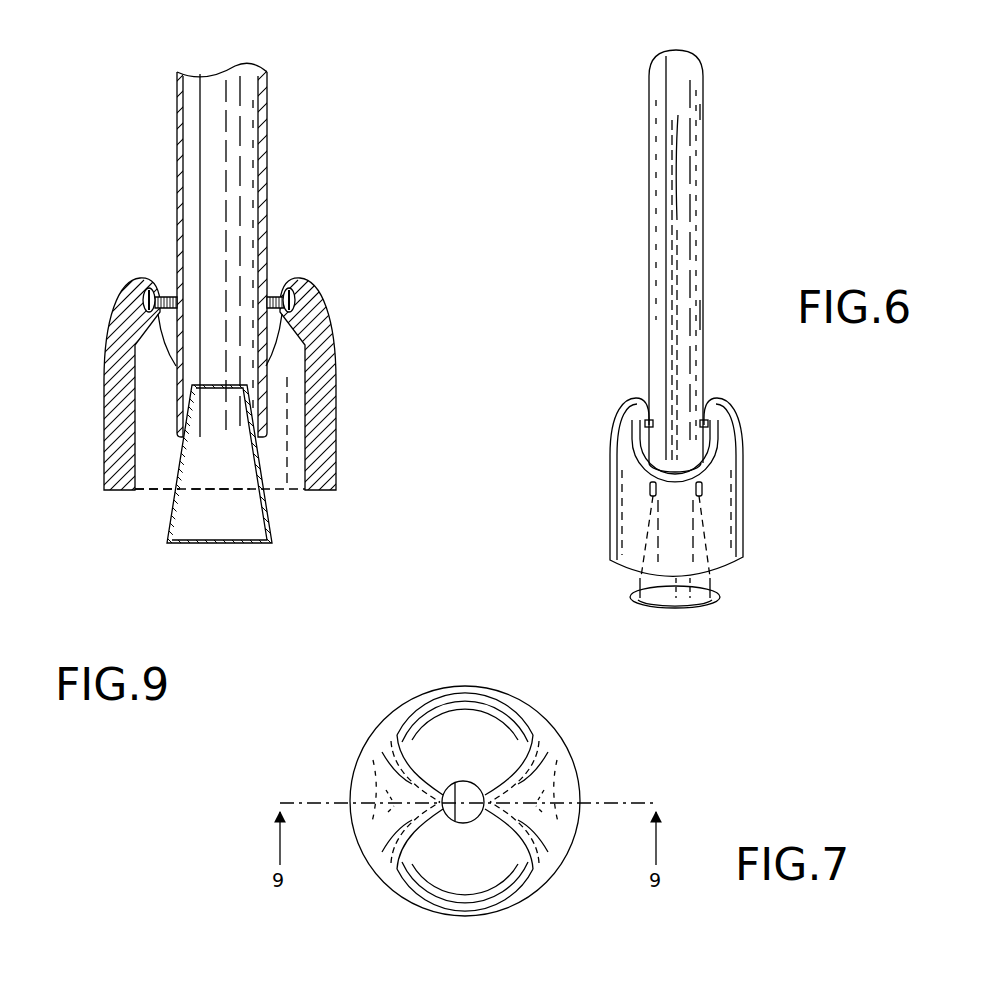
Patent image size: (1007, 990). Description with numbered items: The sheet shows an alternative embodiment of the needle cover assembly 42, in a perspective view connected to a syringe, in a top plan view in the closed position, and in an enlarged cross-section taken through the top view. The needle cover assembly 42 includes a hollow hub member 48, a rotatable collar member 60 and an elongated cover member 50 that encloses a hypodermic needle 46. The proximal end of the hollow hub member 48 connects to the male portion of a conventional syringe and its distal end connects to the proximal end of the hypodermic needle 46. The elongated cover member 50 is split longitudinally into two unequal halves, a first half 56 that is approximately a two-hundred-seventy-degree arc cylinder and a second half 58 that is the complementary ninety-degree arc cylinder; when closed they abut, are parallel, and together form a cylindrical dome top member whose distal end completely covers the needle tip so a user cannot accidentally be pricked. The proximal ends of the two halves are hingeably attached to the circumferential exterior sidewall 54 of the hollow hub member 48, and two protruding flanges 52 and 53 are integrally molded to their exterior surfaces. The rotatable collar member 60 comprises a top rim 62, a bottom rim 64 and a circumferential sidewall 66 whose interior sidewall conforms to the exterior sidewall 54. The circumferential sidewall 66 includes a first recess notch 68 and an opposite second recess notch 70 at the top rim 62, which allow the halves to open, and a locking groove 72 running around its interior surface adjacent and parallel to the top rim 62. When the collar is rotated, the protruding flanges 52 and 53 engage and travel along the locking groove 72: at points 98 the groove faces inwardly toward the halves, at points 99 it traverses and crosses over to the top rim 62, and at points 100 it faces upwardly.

In FIG. 6, the needle cover assembly 42 is at (572, 246).
In FIG. 6, the hypodermic needle 46 is at (673, 217).
In FIG. 6, the hollow hub member 48 is at (681, 615).
In FIG. 6, the elongated cover member 50 is at (692, 48).
In FIG. 9, the protruding flange 52 is at (292, 286).
In FIG. 6, the protruding flange 52 is at (716, 398).
In FIG. 9, the protruding flange 53 is at (145, 286).
In FIG. 6, the protruding flange 53 is at (634, 398).
In FIG. 6, the circumferential exterior sidewall 54 is at (647, 580).
In FIG. 6, the first half 56 is at (704, 113).
In FIG. 6, the second half 58 is at (649, 92).
In FIG. 9, the rotatable collar member 60 is at (336, 458).
In FIG. 6, the rotatable collar member 60 is at (743, 537).
In FIG. 7, the rotatable collar member 60 is at (574, 764).
In FIG. 9, the top rim 62 is at (152, 286).
In FIG. 9, the bottom rim 64 is at (293, 490).
In FIG. 9, the circumferential sidewall 66 is at (168, 462).
In FIG. 7, the first recess notch 68 is at (455, 700).
In FIG. 7, the second recess notch 70 is at (447, 907).
In FIG. 7, the locking groove 72 is at (490, 711).
In FIG. 7, the points 98 is at (483, 791).
In FIG. 7, the points 99 is at (399, 738).
In FIG. 7, the points 100 is at (464, 696).